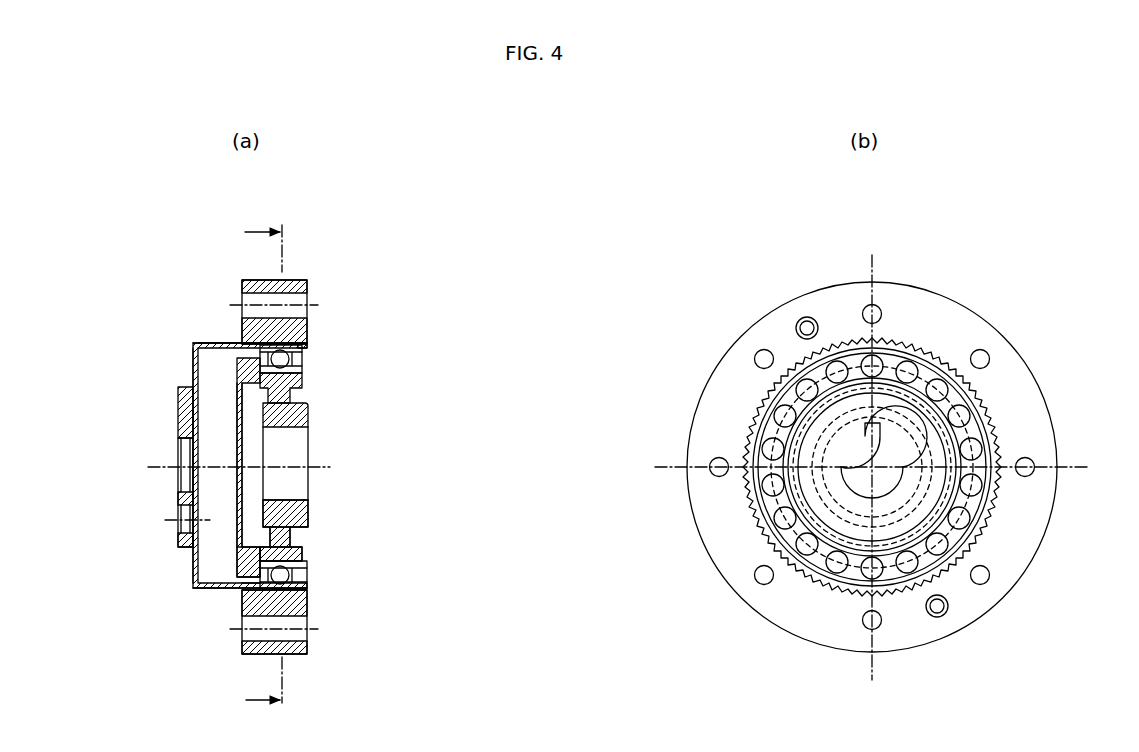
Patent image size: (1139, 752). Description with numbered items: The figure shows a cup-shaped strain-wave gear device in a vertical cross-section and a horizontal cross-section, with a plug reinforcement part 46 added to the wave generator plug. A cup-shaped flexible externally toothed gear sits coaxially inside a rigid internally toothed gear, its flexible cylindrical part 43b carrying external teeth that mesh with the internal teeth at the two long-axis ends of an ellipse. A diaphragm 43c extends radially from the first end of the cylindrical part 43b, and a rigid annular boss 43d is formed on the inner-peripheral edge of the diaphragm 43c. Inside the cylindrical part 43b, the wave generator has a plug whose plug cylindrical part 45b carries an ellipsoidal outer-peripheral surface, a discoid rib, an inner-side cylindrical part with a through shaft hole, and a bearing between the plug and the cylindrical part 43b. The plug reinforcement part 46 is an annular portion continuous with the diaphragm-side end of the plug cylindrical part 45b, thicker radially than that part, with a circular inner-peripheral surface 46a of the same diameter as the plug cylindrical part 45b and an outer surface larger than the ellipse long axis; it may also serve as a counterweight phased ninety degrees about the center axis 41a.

The center axis 41a is at (178, 487).
The flexible cylindrical part 43b is at (227, 343).
The diaphragm 43c is at (193, 370).
The rigid annular boss 43d is at (180, 415).
The plug cylindrical part 45b is at (307, 553).
The plug reinforcement part 46 is at (232, 565).
The circular inner-peripheral surface 46a is at (237, 535).